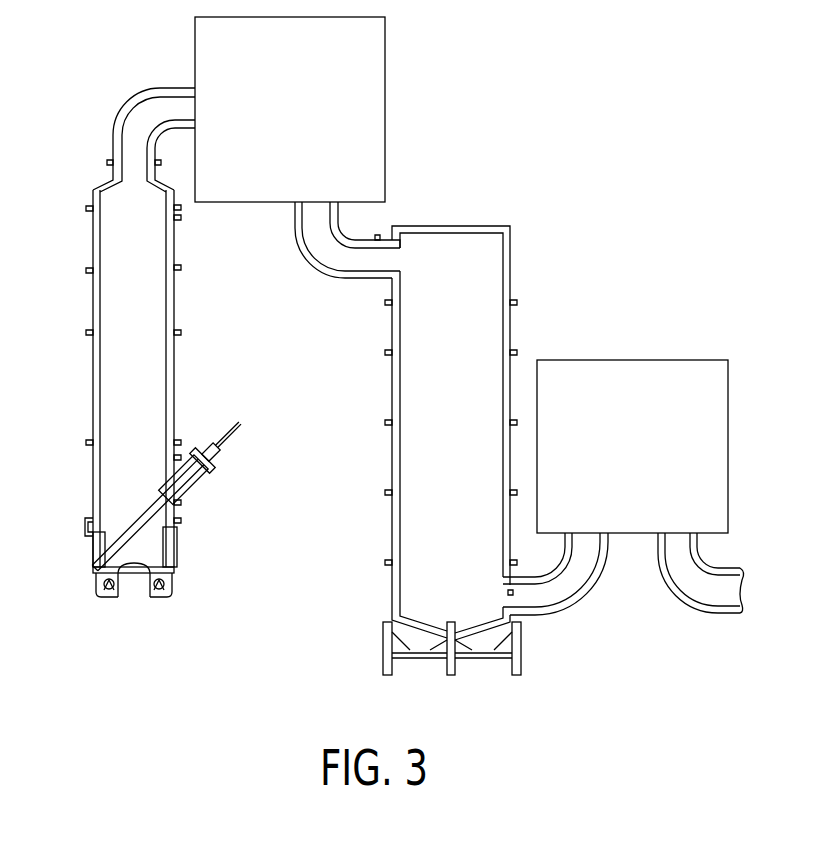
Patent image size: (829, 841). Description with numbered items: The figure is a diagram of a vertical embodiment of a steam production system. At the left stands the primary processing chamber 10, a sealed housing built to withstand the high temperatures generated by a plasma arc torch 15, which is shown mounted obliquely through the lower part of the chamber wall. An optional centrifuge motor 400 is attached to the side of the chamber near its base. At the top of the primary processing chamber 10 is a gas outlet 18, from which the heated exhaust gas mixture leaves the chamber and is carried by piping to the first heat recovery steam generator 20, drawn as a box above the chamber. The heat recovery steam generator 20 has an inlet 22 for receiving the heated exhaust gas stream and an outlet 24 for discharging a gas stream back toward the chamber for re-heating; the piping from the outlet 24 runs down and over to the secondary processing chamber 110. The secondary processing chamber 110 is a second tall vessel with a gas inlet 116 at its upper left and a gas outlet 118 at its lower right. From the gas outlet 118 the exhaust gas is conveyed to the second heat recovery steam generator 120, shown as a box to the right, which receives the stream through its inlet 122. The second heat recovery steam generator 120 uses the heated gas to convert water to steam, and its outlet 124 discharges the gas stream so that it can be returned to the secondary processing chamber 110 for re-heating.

The primary processing chamber 10 is at (95, 370).
The plasma arc torch 15 is at (170, 500).
The gas outlet 18 is at (132, 186).
The heat recovery steam generator 20 is at (388, 112).
The inlet 22 is at (183, 110).
The outlet 24 is at (318, 215).
The secondary processing chamber 110 is at (490, 318).
The gas inlet 116 is at (397, 258).
The gas outlet 118 is at (500, 592).
The second heat recovery steam generator 120 is at (637, 360).
The inlet 122 is at (583, 547).
The outlet 124 is at (674, 547).
The centrifuge motor 400 is at (85, 538).